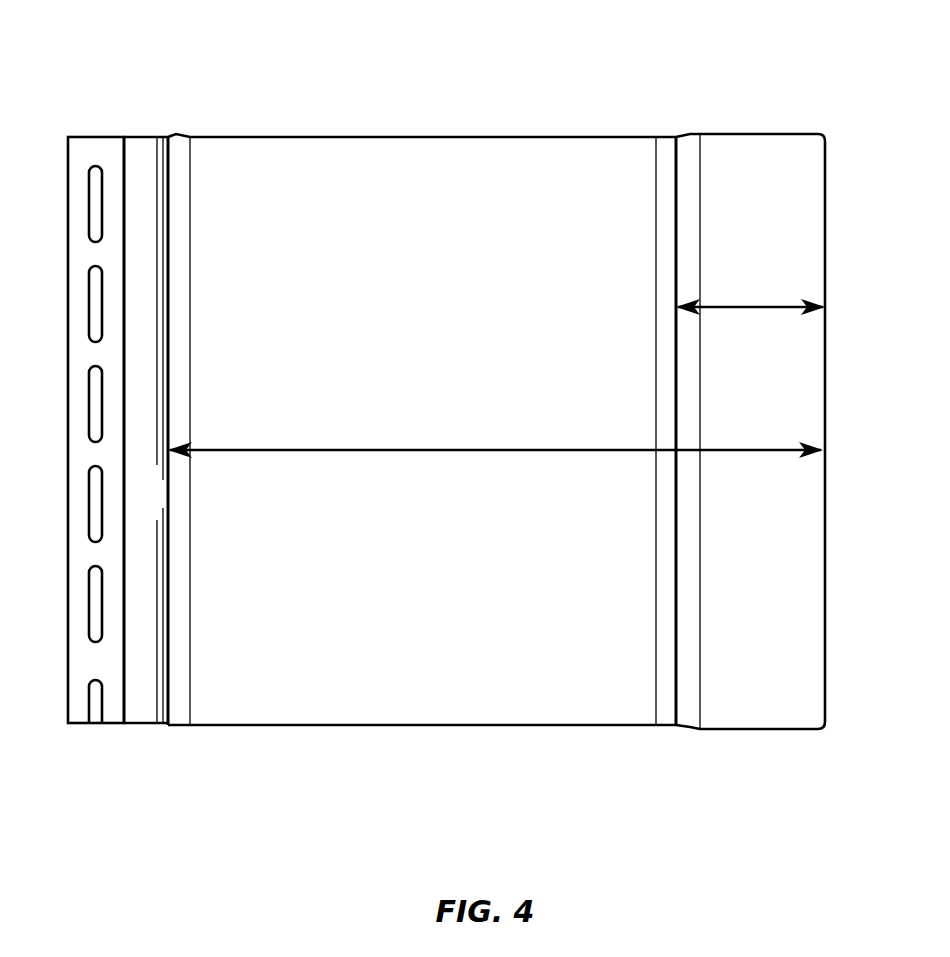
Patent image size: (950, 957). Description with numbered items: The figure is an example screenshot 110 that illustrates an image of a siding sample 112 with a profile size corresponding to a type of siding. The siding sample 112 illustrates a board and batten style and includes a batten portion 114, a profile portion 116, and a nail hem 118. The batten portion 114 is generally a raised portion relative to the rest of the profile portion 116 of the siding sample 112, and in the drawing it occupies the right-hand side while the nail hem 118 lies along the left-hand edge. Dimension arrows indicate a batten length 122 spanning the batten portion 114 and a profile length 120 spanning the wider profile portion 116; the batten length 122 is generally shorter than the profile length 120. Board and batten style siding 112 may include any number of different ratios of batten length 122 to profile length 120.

The screenshot 110 is at (213, 90).
The siding sample 112 is at (68, 322).
The batten portion 114 is at (682, 738).
The profile portion 116 is at (828, 783).
The nail hem 118 is at (68, 737).
The profile length 120 is at (750, 451).
The batten length 122 is at (753, 308).